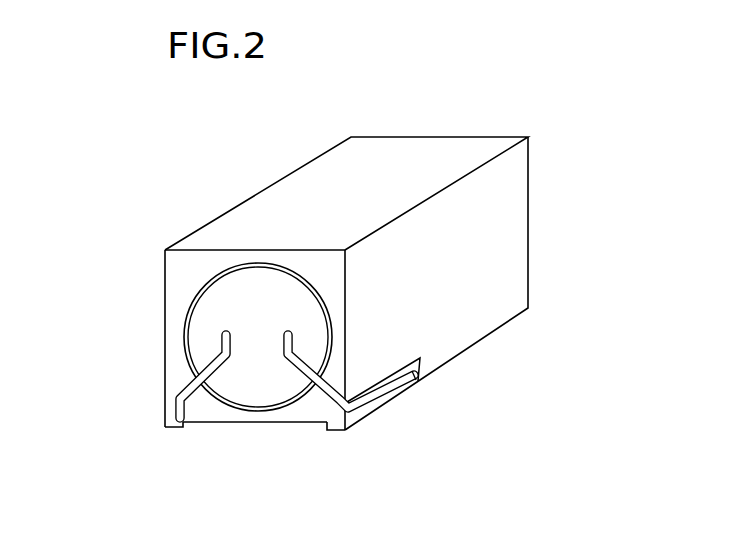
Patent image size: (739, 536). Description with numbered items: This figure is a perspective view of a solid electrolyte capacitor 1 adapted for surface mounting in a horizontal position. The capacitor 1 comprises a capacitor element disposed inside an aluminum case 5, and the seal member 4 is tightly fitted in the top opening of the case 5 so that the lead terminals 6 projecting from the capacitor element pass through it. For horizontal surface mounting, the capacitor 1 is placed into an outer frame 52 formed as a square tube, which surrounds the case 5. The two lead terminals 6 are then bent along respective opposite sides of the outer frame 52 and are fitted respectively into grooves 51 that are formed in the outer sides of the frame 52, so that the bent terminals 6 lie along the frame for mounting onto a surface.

The solid electrolyte capacitor 1 is at (311, 275).
The seal member 4 is at (220, 310).
The aluminum case 5 is at (240, 265).
The lead terminals 6 is at (190, 387).
The grooves 51 is at (388, 380).
The outer frame 52 is at (463, 310).